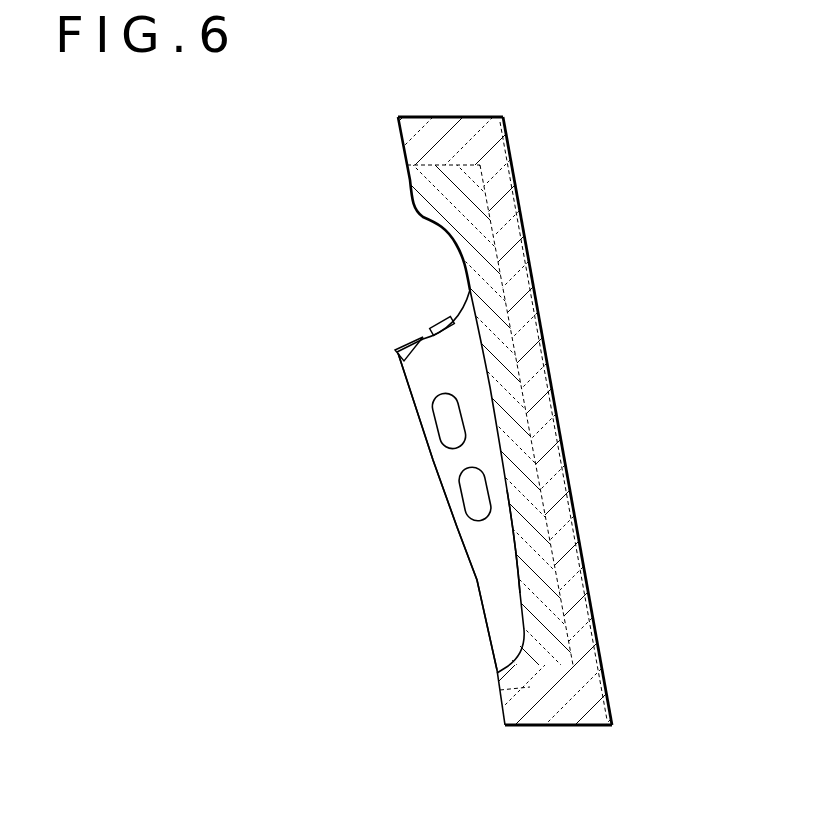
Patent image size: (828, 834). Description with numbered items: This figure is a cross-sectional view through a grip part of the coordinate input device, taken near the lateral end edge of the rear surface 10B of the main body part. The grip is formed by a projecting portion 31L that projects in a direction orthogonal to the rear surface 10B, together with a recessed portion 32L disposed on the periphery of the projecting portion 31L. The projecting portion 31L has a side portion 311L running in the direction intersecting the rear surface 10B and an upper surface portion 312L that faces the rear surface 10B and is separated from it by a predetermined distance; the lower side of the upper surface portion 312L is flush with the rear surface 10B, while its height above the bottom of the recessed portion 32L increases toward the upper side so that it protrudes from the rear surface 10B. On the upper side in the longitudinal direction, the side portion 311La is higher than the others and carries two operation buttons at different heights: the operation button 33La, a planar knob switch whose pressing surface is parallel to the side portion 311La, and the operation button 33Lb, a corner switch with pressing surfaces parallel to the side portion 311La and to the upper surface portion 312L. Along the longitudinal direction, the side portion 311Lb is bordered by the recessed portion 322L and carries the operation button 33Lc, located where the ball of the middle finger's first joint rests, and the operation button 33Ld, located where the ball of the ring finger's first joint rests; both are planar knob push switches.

The rear surface 10B is at (406, 160).
The recessed portion 32L is at (470, 284).
The recessed portion 322L is at (492, 397).
The projecting portion 31L is at (417, 385).
The operation button 33La is at (447, 318).
The side portion 311La is at (430, 337).
The operation button 33Lb is at (397, 349).
The operation button 33Lc is at (447, 422).
The upper surface portion 312L is at (433, 460).
The operation button 33Ld is at (467, 497).
The side portion 311Lb is at (497, 540).
The side portion 311L is at (485, 572).